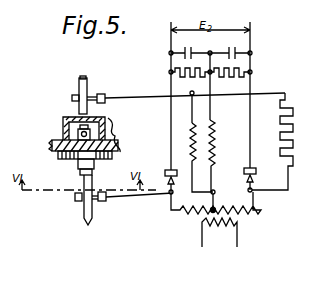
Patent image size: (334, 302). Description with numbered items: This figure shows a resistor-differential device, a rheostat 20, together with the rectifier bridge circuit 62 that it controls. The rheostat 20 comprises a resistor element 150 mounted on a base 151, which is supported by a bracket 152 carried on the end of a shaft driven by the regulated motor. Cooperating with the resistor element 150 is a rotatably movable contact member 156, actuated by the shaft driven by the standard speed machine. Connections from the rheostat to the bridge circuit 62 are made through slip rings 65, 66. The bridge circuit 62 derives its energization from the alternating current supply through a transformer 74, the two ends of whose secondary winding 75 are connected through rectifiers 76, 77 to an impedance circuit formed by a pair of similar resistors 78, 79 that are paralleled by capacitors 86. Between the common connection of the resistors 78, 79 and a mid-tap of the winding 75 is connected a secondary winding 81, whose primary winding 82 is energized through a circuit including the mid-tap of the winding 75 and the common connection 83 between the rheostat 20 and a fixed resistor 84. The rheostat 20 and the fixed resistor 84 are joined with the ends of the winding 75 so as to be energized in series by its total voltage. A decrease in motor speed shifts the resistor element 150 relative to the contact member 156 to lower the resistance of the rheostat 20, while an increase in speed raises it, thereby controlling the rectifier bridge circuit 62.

The rheostat 20 is at (36, 112).
The rectifier bridge circuit 62 is at (246, 110).
The slip ring 65 is at (78, 97).
The slip ring 66 is at (74, 200).
The transformer 74 is at (192, 238).
The secondary winding 75 is at (218, 213).
The rectifier 76 is at (168, 170).
The rectifier 77 is at (257, 175).
The resistor 78 is at (192, 80).
The resistor 79 is at (223, 80).
The secondary winding 81 is at (216, 140).
The primary winding 82 is at (194, 137).
The common connection 83 is at (183, 107).
The fixed resistor 84 is at (292, 112).
The capacitors 86 is at (230, 50).
The resistor element 150 is at (58, 155).
The base 151 is at (52, 145).
The bracket 152 is at (100, 120).
The contact member 156 is at (78, 170).